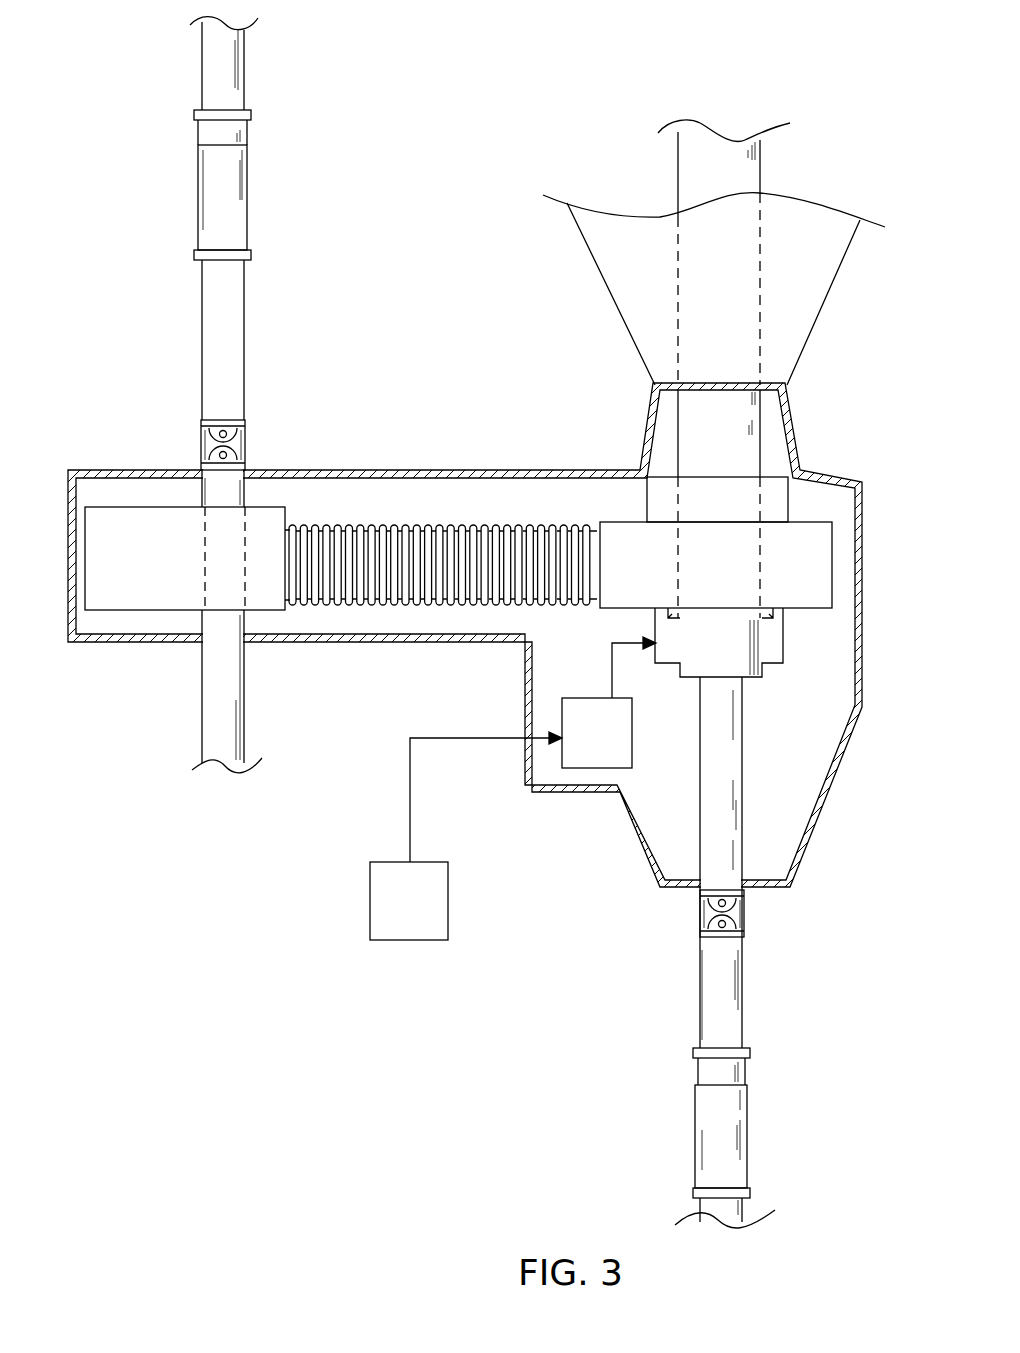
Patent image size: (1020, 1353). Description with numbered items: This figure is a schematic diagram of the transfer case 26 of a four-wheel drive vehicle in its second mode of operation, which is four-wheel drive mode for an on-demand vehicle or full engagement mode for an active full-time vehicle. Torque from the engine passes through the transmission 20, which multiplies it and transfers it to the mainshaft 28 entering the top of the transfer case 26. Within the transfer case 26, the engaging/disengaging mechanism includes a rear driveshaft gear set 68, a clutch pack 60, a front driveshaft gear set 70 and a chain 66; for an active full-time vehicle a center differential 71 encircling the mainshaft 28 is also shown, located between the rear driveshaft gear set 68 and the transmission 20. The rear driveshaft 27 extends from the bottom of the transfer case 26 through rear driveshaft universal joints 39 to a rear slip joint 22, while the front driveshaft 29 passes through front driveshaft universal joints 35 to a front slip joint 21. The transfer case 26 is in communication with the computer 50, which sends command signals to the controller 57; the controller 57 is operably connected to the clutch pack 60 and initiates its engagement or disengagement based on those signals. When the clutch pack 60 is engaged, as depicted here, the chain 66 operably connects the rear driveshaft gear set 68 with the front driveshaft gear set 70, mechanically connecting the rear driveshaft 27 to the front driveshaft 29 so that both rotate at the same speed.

The transmission 20 is at (603, 278).
The front slip joint 21 is at (247, 190).
The rear slip joint 22 is at (747, 1125).
The transfer case 26 is at (370, 641).
The rear driveshaft 27 is at (742, 985).
The mainshaft 28 is at (762, 253).
The front driveshaft 29 is at (245, 55).
The front driveshaft universal joints 35 is at (206, 443).
The rear driveshaft universal joints 39 is at (745, 905).
The computer 50 is at (466, 836).
The controller 57 is at (609, 702).
The clutch pack 60 is at (784, 640).
The chain 66 is at (345, 525).
The rear driveshaft gear set 68 is at (833, 570).
The front driveshaft gear set 70 is at (117, 611).
The center differential 71 is at (789, 495).